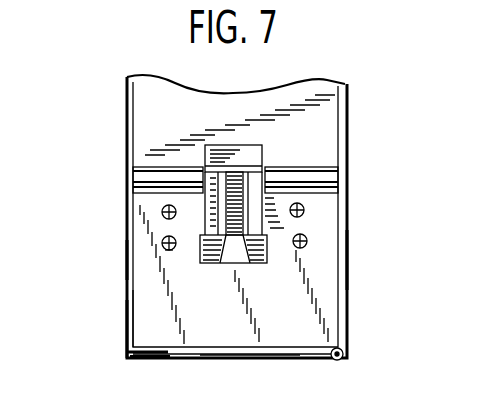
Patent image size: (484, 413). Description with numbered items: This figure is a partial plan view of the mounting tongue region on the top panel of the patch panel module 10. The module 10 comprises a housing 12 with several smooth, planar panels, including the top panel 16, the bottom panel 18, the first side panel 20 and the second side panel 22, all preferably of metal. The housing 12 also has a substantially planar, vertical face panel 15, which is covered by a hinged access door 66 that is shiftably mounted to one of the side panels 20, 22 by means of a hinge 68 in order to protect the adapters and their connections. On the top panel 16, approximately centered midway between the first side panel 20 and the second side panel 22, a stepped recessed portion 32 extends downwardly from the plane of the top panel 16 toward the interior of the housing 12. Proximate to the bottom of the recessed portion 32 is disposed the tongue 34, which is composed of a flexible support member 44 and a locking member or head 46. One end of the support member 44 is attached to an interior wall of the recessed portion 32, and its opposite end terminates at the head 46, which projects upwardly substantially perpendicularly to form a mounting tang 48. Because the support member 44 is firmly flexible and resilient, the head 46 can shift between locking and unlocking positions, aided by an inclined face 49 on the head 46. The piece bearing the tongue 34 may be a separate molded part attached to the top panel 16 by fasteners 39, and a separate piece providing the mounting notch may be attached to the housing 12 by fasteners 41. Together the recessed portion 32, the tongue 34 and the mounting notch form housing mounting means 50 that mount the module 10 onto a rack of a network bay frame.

The module 10 is at (84, 290).
The housing 12 is at (122, 336).
The face panel 15 is at (168, 357).
The top panel 16 is at (135, 301).
The bottom panel 18 is at (48, 15).
The first side panel 20 is at (348, 257).
The second side panel 22 is at (123, 253).
The recessed portion 32 is at (200, 238).
The tongue 34 is at (200, 232).
The fasteners 39 is at (162, 207).
The fasteners 41 is at (172, 250).
The flexible support member 44 is at (256, 264).
The locking member or head 46 is at (201, 155).
The mounting tang 48 is at (304, 208).
The inclined face 49 is at (217, 147).
The housing mounting means 50 is at (245, 144).
The hinged access door 66 is at (254, 358).
The hinge 68 is at (343, 360).